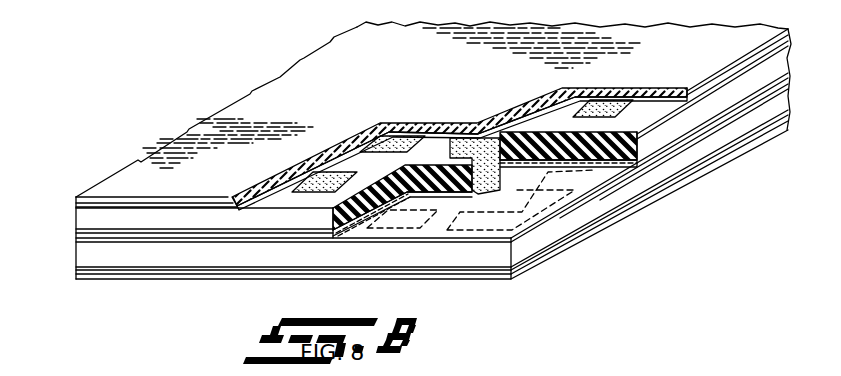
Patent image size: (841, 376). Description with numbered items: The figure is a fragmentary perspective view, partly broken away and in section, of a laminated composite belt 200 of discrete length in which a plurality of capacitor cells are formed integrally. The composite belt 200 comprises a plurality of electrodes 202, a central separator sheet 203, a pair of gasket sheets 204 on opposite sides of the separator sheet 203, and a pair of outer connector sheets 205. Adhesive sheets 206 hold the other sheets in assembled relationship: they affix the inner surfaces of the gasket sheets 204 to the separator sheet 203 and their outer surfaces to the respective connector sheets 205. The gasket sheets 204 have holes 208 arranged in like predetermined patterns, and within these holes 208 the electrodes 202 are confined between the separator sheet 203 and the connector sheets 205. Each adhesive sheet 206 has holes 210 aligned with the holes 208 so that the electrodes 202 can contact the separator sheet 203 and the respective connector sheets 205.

The composite belt 200 is at (249, 76).
The electrodes 202 is at (323, 172).
The separator sheet 203 is at (613, 167).
The gasket sheets 204 is at (752, 75).
The connector sheets 205 is at (107, 205).
The adhesive sheets 206 is at (176, 199).
The holes 208 is at (402, 130).
The holes 210 is at (623, 100).